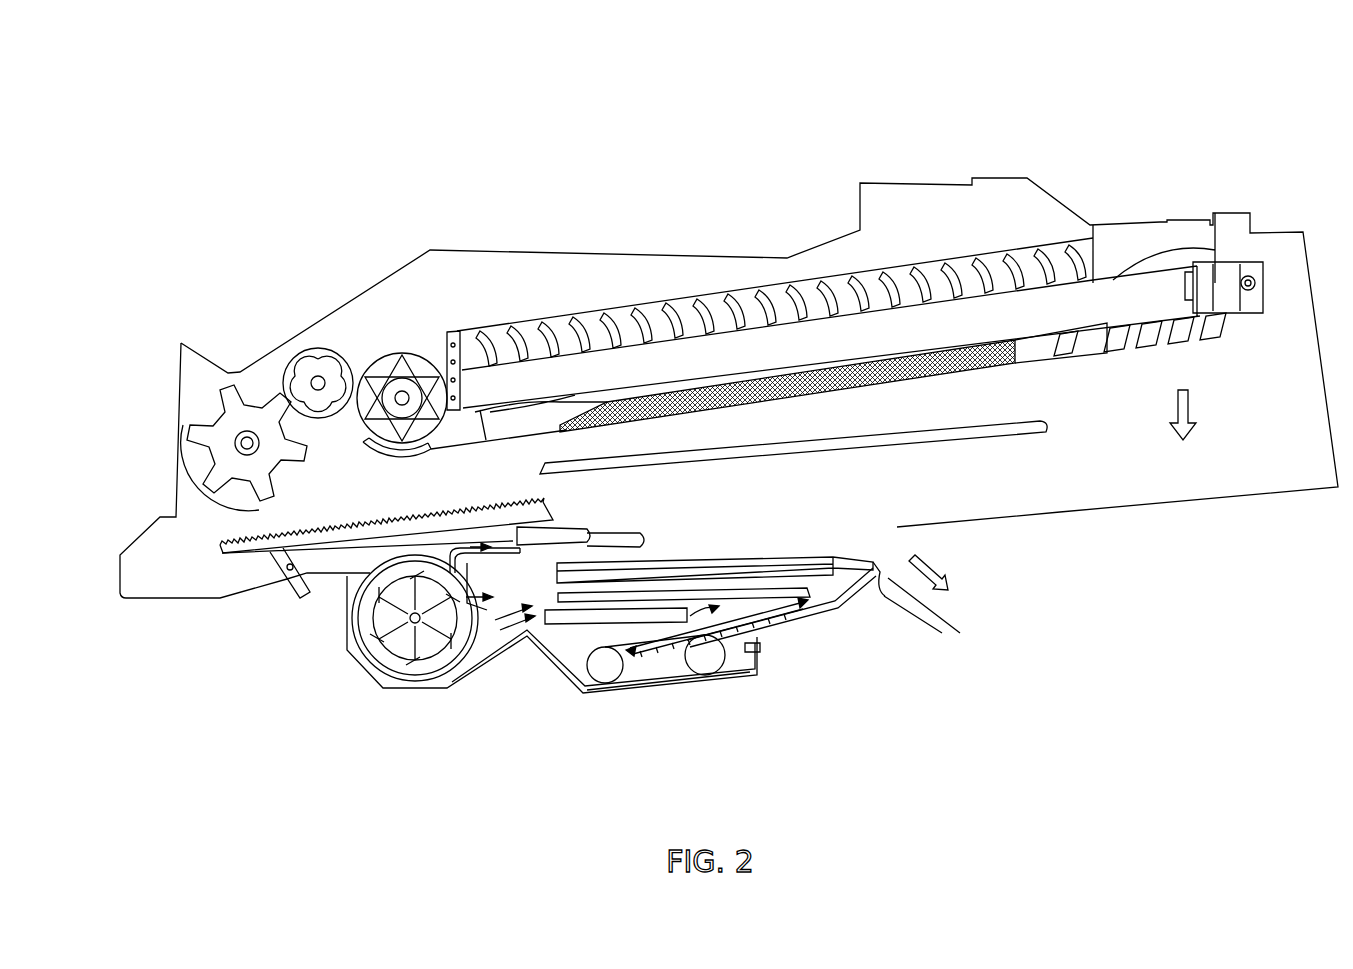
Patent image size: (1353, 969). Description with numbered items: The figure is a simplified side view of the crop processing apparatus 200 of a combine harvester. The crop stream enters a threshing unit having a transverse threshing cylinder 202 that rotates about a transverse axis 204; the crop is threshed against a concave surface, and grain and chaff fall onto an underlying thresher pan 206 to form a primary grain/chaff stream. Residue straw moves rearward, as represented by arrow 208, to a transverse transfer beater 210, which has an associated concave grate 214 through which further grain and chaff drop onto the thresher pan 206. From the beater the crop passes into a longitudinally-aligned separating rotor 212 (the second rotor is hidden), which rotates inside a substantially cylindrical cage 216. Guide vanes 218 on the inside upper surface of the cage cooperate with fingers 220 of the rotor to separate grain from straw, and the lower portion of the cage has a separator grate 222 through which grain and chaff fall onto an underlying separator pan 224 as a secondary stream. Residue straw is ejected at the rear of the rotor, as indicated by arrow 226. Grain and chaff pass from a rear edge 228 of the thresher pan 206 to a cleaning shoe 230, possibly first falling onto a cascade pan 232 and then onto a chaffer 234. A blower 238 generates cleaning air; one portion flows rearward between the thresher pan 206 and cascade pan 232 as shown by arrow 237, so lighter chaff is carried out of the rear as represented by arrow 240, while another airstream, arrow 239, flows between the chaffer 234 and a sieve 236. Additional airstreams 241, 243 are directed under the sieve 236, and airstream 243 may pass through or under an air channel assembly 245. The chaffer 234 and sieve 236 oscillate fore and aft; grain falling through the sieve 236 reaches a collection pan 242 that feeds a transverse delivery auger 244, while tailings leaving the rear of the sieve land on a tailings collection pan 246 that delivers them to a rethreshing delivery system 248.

The crop processing apparatus 200 is at (346, 153).
The threshing cylinder 202 is at (215, 432).
The transverse axis 204 is at (243, 430).
The thresher pan 206 is at (338, 542).
The arrow 208 is at (306, 462).
The transfer beater 210 is at (383, 363).
The separating rotor 212 is at (555, 387).
The concave grate 214 is at (380, 457).
The cage 216 is at (687, 297).
The guide vanes 218 is at (795, 277).
The fingers 220 is at (977, 262).
The separator grate 222 is at (997, 372).
The separator pan 224 is at (920, 452).
The arrow 226 is at (1190, 407).
The rear edge 228 is at (557, 520).
The cleaning shoe 230 is at (274, 720).
The cascade pan 232 is at (592, 536).
The chaffer 234 is at (848, 560).
The sieve 236 is at (755, 592).
The arrow 237 is at (457, 543).
The blower 238 is at (400, 647).
The arrow 239 is at (467, 657).
The arrow 240 is at (927, 570).
The airstream 241 is at (507, 623).
The collection pan 242 is at (773, 607).
The airstream 243 is at (503, 630).
The transverse delivery auger 244 is at (605, 677).
The air channel assembly 245 is at (640, 617).
The tailings collection pan 246 is at (835, 605).
The rethreshing delivery system 248 is at (705, 667).